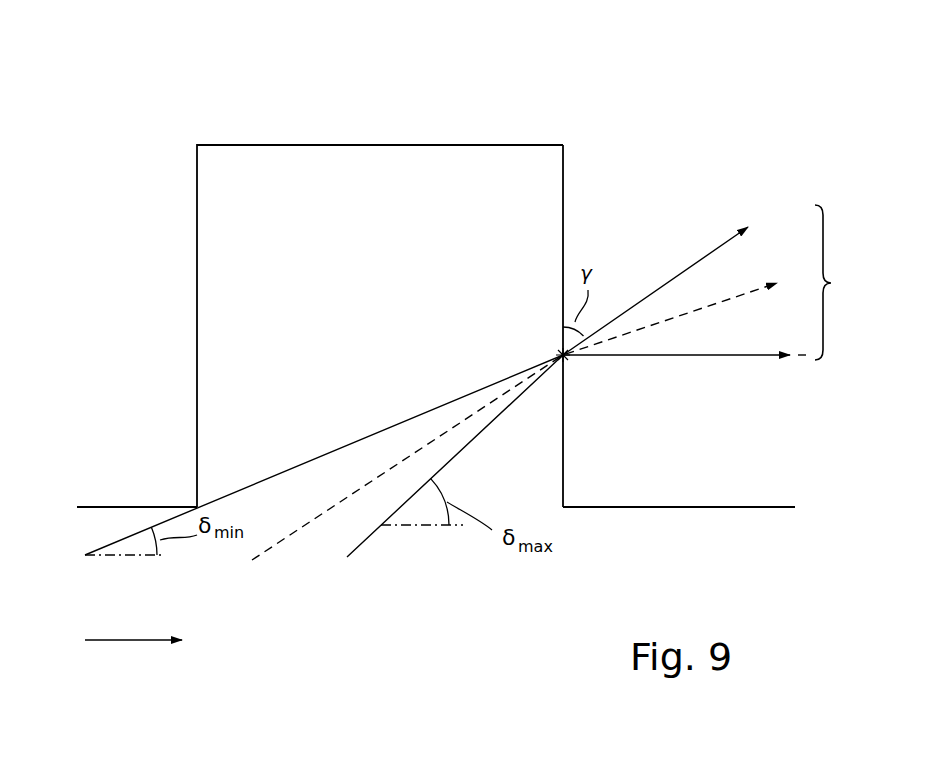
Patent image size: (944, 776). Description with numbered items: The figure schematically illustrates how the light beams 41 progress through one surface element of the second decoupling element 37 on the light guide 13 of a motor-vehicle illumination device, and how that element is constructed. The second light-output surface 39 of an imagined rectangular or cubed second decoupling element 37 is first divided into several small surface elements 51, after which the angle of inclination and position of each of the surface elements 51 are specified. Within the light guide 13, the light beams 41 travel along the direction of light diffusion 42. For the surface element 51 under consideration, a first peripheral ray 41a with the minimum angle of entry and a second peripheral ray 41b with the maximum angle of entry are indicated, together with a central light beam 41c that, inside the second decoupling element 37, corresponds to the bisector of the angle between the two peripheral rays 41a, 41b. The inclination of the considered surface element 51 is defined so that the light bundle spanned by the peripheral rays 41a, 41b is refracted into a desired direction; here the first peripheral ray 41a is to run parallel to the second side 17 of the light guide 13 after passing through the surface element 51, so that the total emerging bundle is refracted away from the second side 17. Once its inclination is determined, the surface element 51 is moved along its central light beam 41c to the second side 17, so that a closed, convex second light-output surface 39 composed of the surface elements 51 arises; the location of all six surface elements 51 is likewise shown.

The light guide 13 is at (98, 103).
The second side 17 is at (97, 507).
The second decoupling element 37 is at (255, 160).
The second light-output surface 39 is at (566, 165).
The light beams 41 is at (839, 282).
The first peripheral ray 41a is at (287, 470).
The second peripheral ray 41b is at (706, 255).
The central light beam 41c is at (735, 295).
The direction of light diffusion 42 is at (130, 642).
The surface elements 51 is at (566, 358).